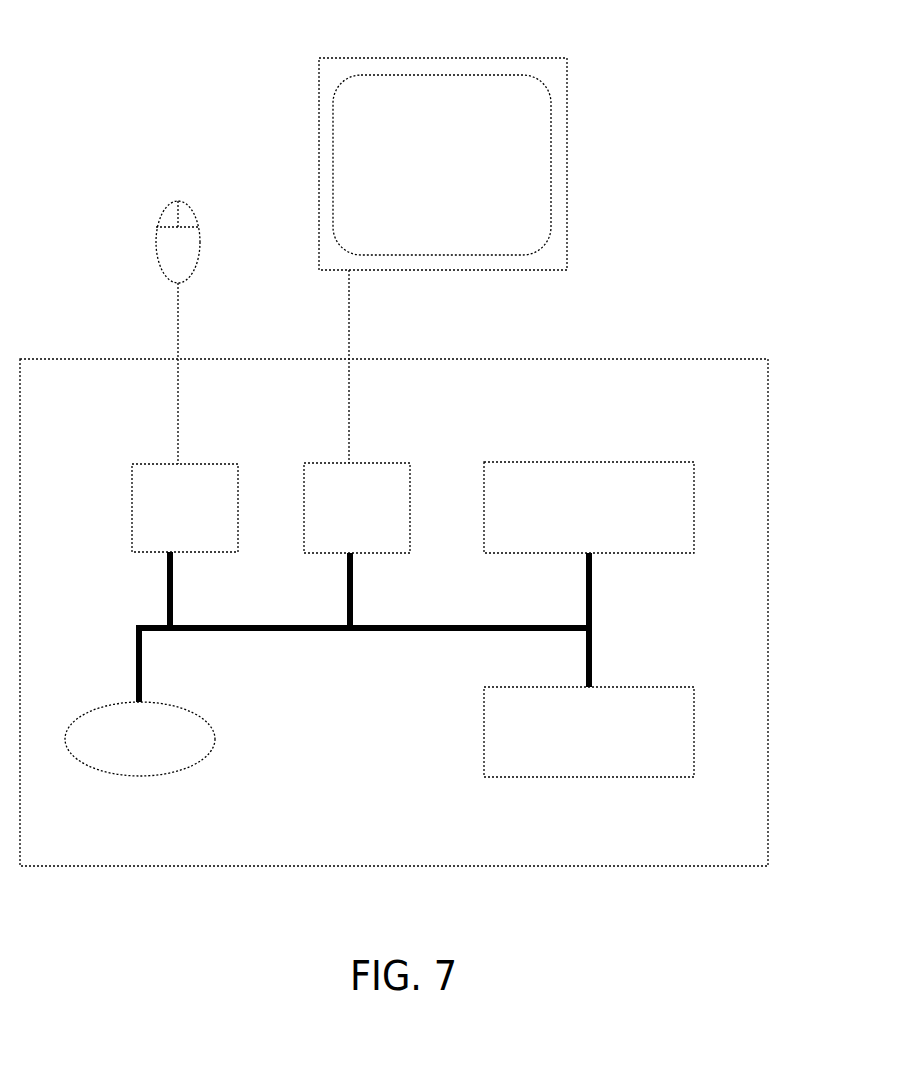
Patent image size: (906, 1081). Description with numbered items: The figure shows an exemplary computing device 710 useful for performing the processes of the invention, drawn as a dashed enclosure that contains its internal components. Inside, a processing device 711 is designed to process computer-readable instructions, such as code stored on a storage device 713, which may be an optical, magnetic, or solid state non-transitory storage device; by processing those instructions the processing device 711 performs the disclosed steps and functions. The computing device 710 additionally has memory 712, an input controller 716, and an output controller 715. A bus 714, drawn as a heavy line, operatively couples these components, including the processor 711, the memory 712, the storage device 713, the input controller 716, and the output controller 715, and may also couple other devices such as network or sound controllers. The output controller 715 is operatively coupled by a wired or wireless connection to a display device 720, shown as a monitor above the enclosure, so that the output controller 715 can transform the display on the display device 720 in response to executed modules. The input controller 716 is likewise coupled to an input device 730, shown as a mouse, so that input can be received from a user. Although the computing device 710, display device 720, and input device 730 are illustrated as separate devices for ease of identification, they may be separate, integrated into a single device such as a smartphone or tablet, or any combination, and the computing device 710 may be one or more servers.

The computing device 710 is at (605, 358).
The processing device 711 is at (625, 462).
The memory 712 is at (650, 687).
The storage device 713 is at (215, 743).
The bus 714 is at (395, 628).
The output controller 715 is at (385, 463).
The input controller 716 is at (200, 464).
The display device 720 is at (567, 207).
The input device 730 is at (191, 202).